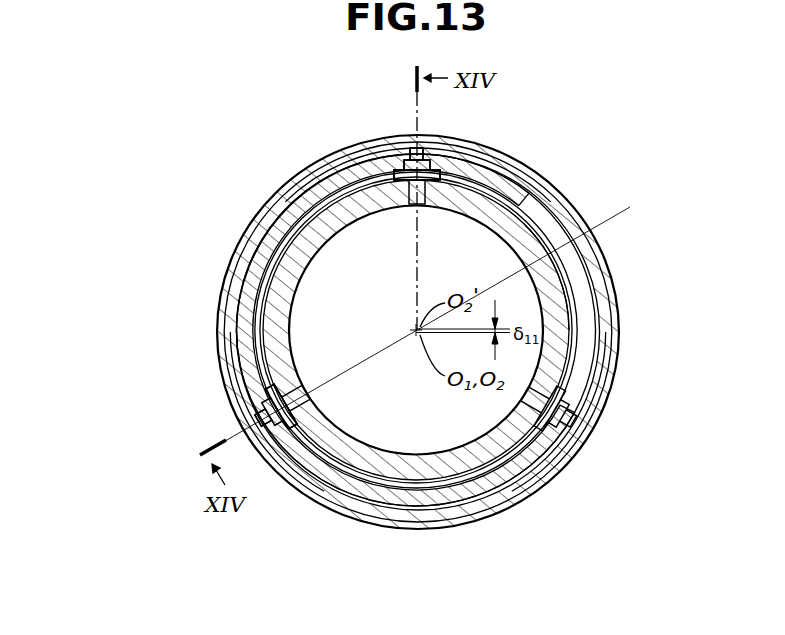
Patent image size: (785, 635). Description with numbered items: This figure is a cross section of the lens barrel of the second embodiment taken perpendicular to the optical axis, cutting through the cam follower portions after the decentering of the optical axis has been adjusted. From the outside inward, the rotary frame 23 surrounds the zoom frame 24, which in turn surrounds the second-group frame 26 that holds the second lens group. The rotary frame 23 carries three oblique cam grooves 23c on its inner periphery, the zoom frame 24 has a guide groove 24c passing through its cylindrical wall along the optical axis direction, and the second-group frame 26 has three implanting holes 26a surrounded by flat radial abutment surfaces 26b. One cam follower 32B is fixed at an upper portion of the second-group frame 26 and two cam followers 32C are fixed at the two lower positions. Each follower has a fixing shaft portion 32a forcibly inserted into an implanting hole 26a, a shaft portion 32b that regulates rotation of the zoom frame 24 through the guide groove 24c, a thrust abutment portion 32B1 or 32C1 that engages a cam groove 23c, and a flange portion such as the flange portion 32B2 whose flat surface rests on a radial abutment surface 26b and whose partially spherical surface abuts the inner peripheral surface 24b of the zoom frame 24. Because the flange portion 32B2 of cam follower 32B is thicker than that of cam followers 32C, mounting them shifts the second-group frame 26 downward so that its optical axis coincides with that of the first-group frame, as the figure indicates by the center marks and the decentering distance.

The rotary frame 23 is at (583, 222).
The cam grooves 23c is at (500, 165).
The zoom frame 24 is at (570, 258).
The inner peripheral surface 24b is at (572, 295).
The guide groove 24c is at (398, 160).
The second-group frame 26 is at (567, 323).
The implanting holes 26a is at (340, 190).
The radial abutment surfaces 26b is at (522, 190).
The fixing shaft portions 32a is at (340, 190).
The shaft portions 32b is at (398, 160).
The cam follower 32B is at (430, 150).
The thrust abutment portion 32B1 is at (414, 147).
The flange portion 32B2 is at (405, 168).
The cam follower 32C is at (588, 428).
The thrust abutment portion 32C1 is at (265, 410).